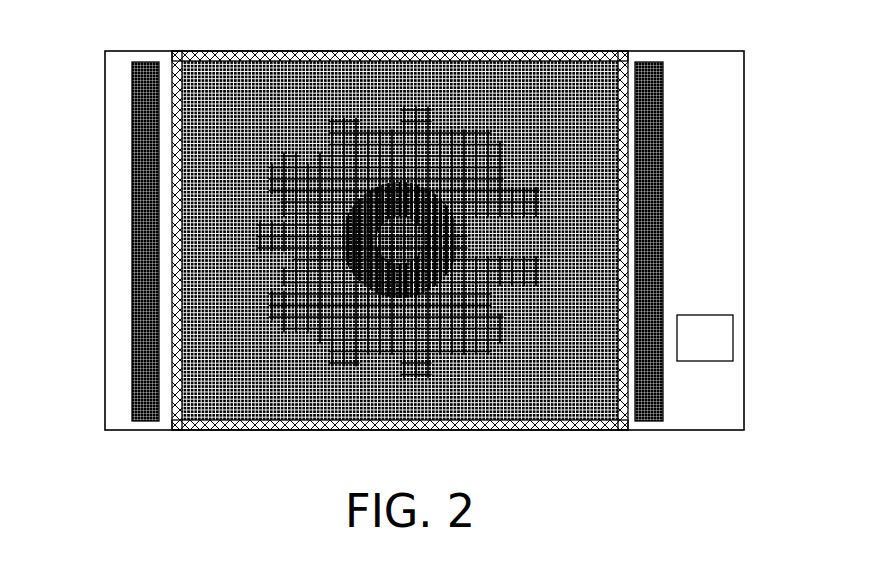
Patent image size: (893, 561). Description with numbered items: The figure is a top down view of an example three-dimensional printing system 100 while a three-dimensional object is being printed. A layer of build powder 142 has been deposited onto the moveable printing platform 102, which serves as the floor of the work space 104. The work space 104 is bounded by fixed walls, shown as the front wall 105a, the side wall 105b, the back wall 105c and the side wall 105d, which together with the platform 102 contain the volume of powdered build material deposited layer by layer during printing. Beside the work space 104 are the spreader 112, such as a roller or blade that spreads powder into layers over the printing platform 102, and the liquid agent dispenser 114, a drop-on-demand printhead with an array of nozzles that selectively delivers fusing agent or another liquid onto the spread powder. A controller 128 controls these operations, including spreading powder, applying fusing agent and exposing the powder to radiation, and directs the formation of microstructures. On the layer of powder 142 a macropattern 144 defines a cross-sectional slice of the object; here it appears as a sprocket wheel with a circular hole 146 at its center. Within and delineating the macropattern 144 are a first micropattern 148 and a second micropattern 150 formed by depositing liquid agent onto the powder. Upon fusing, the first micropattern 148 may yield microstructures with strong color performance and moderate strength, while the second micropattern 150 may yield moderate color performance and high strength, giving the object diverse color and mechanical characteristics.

The three-dimensional printing system 100 is at (778, 72).
The printing platform 102 is at (503, 72).
The work space 104 is at (590, 72).
The front wall 105a is at (481, 420).
The side wall 105b is at (182, 141).
The back wall 105c is at (330, 62).
The side wall 105d is at (620, 352).
The spreader 112 is at (135, 103).
The liquid agent dispenser 114 is at (658, 109).
The controller 128 is at (705, 338).
The layer of build powder 142 is at (279, 390).
The macropattern 144 is at (523, 263).
The circular hole 146 is at (410, 232).
The first micropattern 148 is at (305, 222).
The second micropattern 150 is at (350, 244).